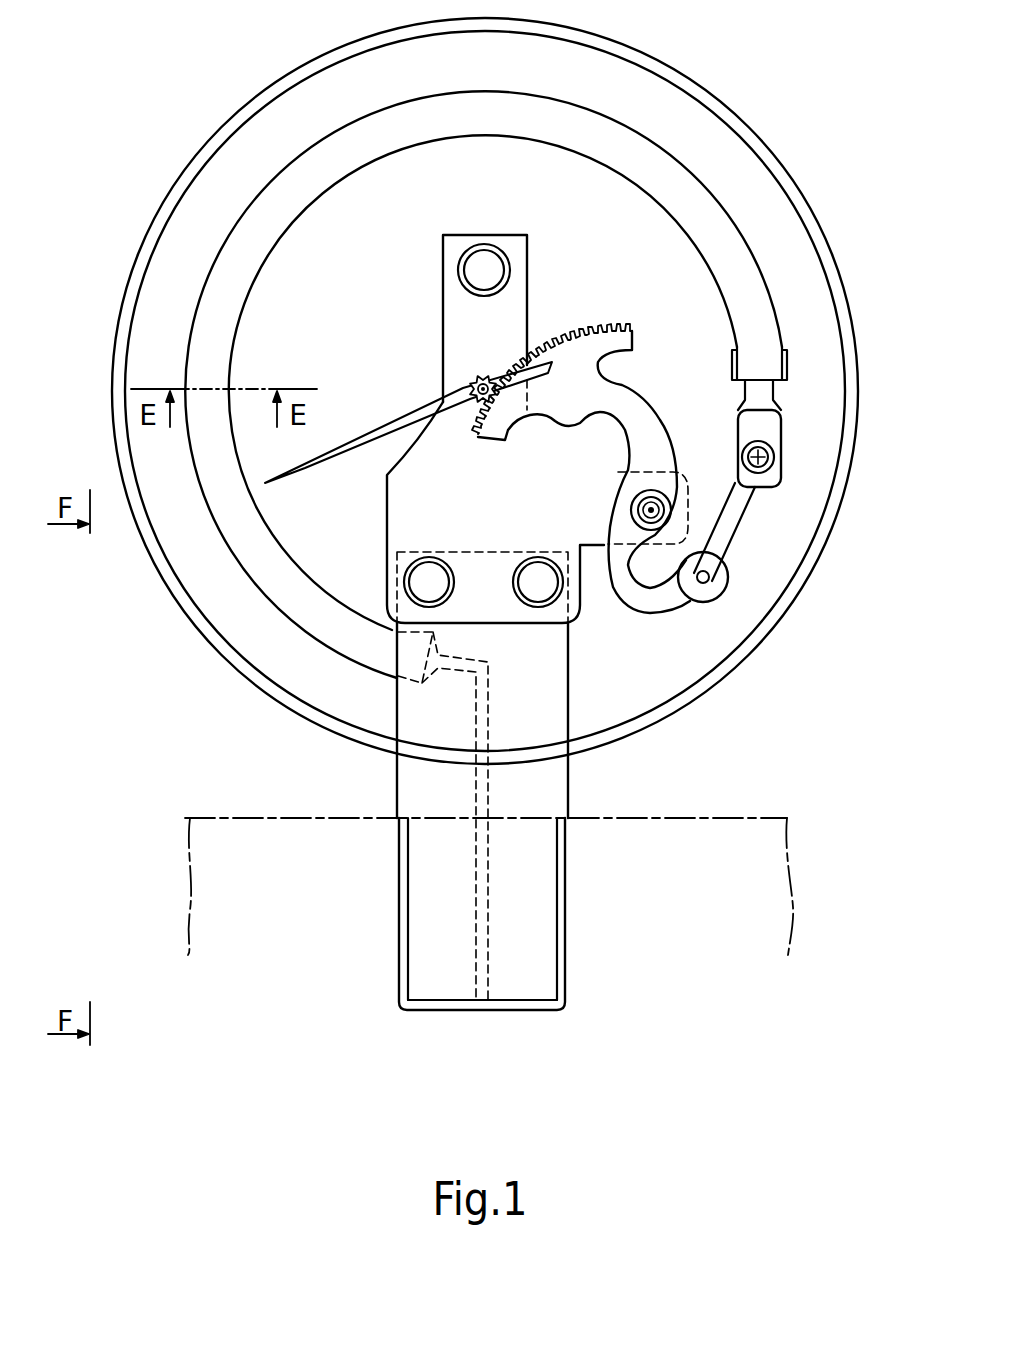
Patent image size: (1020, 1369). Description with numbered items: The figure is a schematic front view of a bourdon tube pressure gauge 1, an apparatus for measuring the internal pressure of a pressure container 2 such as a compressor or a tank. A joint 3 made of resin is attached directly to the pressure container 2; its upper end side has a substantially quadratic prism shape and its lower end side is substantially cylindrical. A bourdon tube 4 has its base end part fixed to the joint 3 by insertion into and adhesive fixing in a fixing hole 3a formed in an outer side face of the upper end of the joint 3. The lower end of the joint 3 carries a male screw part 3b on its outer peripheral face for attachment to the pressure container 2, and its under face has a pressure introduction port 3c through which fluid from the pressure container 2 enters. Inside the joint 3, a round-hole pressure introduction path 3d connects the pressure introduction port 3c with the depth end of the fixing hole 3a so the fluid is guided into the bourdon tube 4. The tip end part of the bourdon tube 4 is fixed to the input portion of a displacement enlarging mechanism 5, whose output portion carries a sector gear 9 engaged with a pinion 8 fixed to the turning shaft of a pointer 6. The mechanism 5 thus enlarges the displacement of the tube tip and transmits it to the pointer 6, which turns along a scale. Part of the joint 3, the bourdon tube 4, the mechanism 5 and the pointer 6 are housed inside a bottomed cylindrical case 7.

The bourdon tube pressure gauge 1 is at (802, 106).
The pressure container 2 is at (768, 818).
The joint 3 is at (568, 775).
The fixing hole 3a is at (418, 652).
The male screw part 3b is at (567, 957).
The pressure introduction port 3c is at (480, 1012).
The pressure introduction path 3d is at (487, 900).
The bourdon tube 4 is at (258, 275).
The displacement enlarging mechanism 5 is at (778, 556).
The pointer 6 is at (372, 431).
The case 7 is at (858, 366).
The pinion 8 is at (481, 380).
The sector gear 9 is at (610, 327).